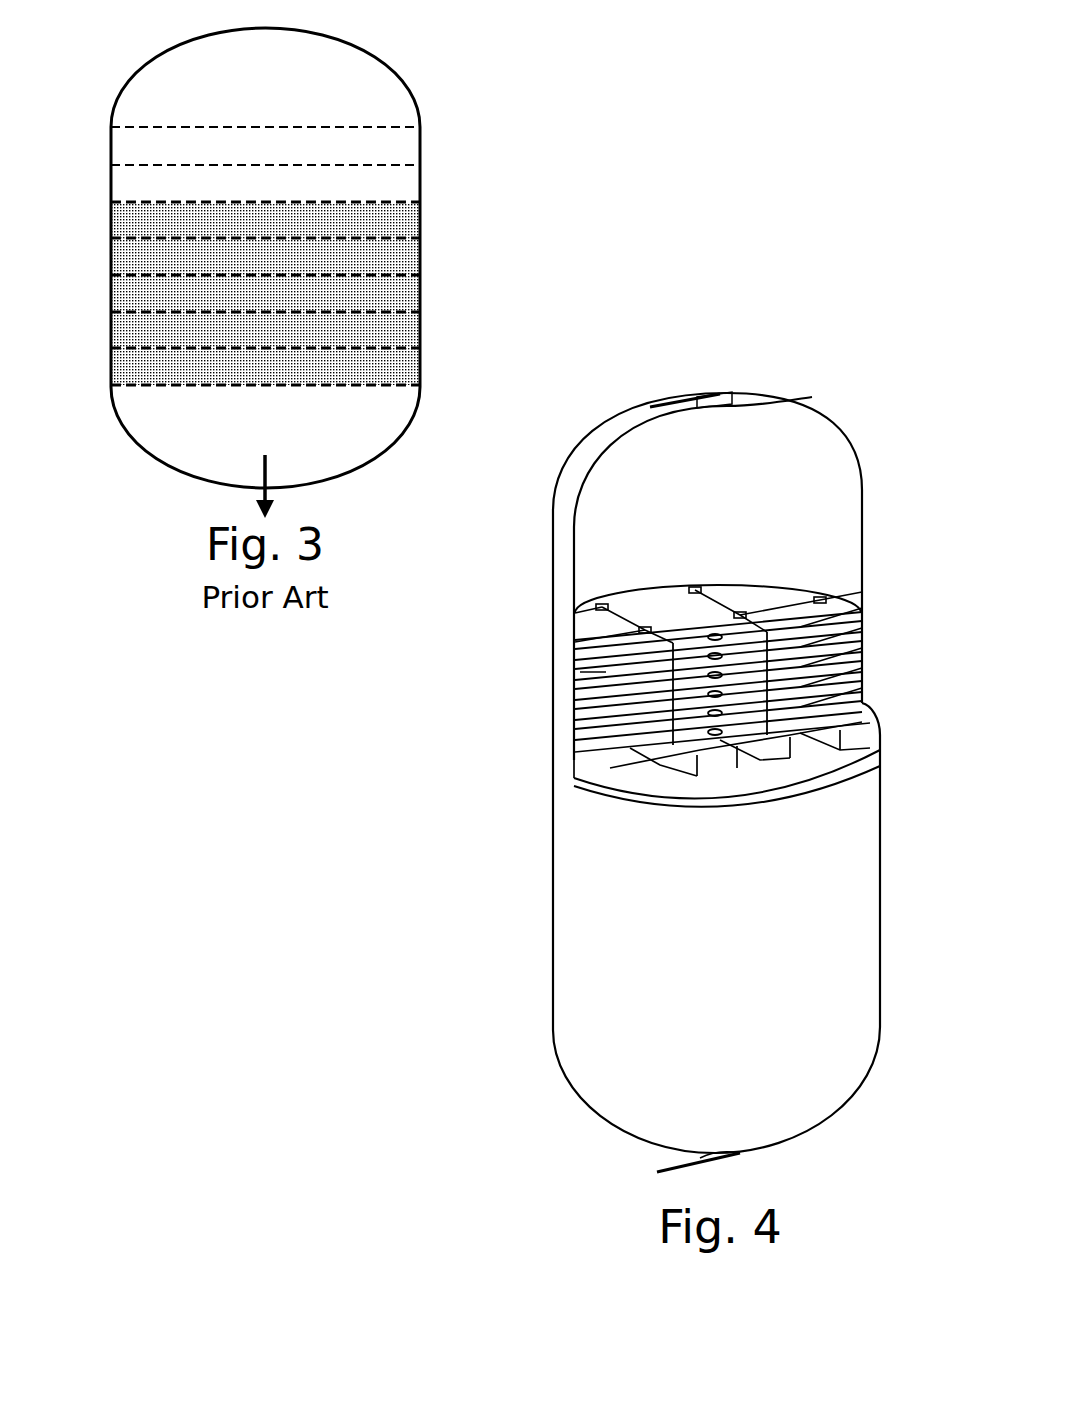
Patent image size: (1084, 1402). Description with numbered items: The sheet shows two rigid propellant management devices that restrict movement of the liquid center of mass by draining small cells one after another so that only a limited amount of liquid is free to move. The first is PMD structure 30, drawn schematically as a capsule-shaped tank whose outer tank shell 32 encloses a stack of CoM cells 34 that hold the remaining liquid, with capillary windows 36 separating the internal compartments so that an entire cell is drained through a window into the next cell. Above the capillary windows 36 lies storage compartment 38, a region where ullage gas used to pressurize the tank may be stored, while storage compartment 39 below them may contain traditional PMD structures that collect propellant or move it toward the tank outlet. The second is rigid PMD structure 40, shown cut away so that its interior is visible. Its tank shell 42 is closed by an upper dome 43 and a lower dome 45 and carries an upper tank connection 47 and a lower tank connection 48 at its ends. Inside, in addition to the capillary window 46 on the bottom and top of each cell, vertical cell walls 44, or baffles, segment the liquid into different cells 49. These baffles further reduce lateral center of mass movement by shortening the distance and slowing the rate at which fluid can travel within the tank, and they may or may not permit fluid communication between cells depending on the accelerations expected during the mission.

In FIG. 3, the PMD structure 30 is at (442, 93).
In FIG. 3, the outer tank shell 32 is at (127, 88).
In FIG. 3, the CoM cells 34 is at (130, 186).
In FIG. 3, the capillary windows 36 is at (141, 204).
In FIG. 3, the storage compartment 38 is at (265, 70).
In FIG. 3, the storage compartment 39 is at (265, 467).
In FIG. 4, the rigid PMD structure 40 is at (872, 405).
In FIG. 4, the tank shell 42 is at (838, 984).
In FIG. 4, the upper dome 43 is at (580, 467).
In FIG. 4, the vertical cell walls 44 is at (878, 762).
In FIG. 4, the lower dome 45 is at (803, 1127).
In FIG. 4, the capillary window 46 is at (606, 673).
In FIG. 4, the upper tank connection 47 is at (678, 396).
In FIG. 4, the lower tank connection 48 is at (693, 1165).
In FIG. 4, the cells 49 is at (826, 665).